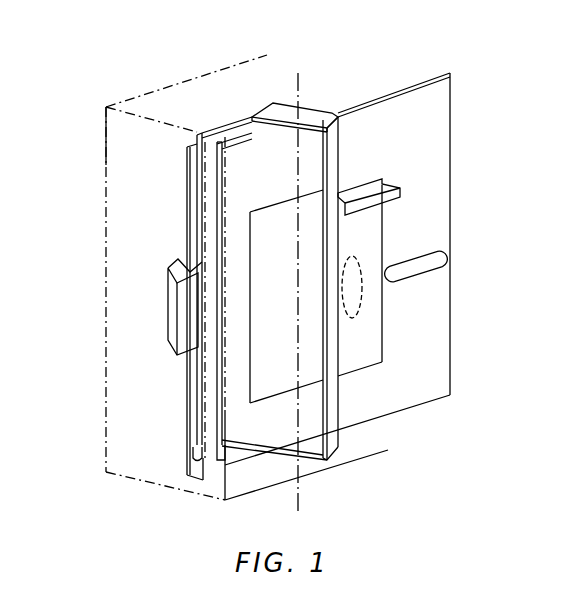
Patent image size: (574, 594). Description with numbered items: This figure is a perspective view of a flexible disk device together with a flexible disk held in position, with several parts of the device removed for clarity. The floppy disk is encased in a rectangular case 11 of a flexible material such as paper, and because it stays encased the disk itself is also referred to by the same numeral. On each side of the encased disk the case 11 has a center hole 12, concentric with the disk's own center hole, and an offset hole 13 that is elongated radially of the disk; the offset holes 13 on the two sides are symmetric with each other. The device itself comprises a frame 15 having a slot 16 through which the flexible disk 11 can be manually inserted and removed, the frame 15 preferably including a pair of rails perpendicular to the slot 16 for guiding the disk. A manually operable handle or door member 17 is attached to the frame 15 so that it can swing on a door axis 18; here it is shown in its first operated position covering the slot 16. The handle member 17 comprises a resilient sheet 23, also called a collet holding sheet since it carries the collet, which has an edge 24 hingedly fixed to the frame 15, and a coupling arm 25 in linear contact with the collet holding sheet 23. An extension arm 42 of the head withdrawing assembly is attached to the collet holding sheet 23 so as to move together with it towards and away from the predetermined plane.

The case 11 is at (450, 242).
The center hole 12 is at (356, 283).
The offset hole 13 is at (414, 281).
The frame 15 is at (106, 272).
The slot 16 is at (187, 445).
The handle member 17 is at (170, 262).
The door axis 18 is at (300, 84).
The resilient sheet 23 is at (352, 372).
The edge 24 is at (252, 298).
The coupling arm 25 is at (340, 152).
The extension arm 42 is at (405, 190).